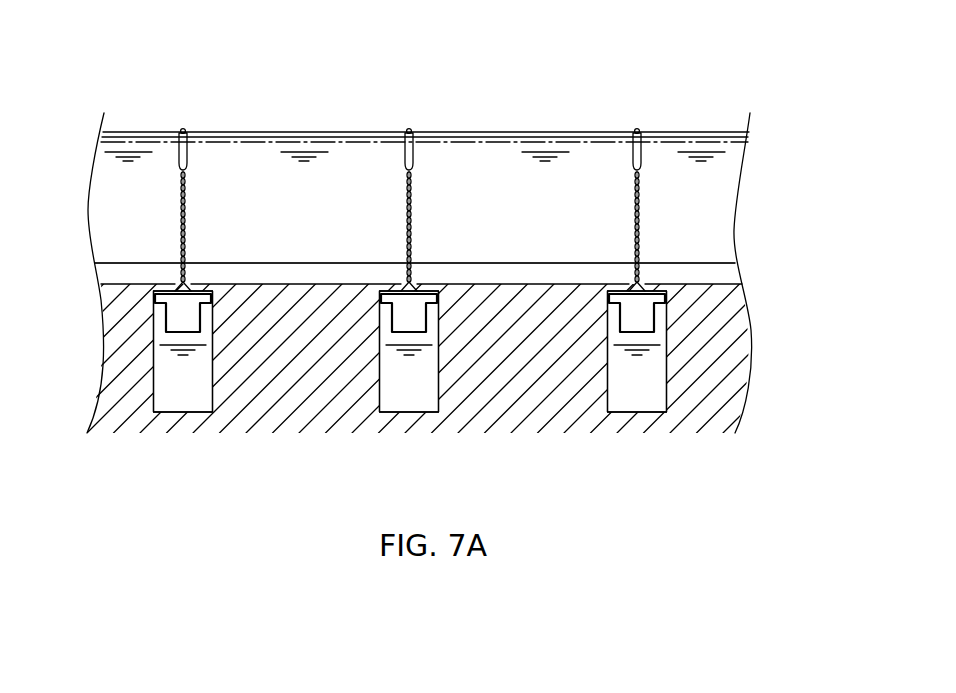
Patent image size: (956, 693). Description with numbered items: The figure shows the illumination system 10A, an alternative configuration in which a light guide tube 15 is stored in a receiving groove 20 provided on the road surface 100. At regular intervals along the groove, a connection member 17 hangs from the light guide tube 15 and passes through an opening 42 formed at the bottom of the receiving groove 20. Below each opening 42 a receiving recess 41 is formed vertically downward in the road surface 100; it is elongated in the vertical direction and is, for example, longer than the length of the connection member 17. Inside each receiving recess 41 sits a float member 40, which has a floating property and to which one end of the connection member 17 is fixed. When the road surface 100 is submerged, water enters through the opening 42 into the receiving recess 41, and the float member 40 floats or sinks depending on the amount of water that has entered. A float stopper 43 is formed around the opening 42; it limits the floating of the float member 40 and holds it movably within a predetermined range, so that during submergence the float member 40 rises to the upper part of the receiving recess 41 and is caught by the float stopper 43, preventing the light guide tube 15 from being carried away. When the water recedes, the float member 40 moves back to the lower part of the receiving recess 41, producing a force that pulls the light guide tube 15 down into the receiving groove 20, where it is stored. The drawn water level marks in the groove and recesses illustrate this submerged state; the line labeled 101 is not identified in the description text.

The illumination system 10A is at (704, 62).
The light guide tube 15 is at (322, 132).
The connection member 17 is at (186, 186).
The receiving groove 20 is at (702, 271).
The float member 40 is at (183, 320).
The receiving recess 41 is at (184, 395).
The opening 42 is at (190, 285).
The float stopper 43 is at (167, 284).
The road surface 100 is at (521, 263).
The liquid surface 101 is at (572, 132).